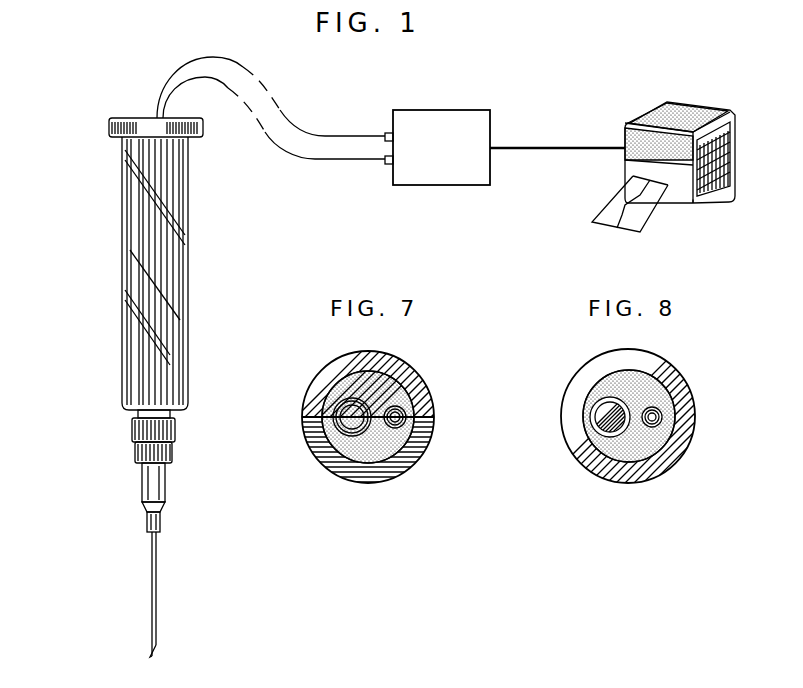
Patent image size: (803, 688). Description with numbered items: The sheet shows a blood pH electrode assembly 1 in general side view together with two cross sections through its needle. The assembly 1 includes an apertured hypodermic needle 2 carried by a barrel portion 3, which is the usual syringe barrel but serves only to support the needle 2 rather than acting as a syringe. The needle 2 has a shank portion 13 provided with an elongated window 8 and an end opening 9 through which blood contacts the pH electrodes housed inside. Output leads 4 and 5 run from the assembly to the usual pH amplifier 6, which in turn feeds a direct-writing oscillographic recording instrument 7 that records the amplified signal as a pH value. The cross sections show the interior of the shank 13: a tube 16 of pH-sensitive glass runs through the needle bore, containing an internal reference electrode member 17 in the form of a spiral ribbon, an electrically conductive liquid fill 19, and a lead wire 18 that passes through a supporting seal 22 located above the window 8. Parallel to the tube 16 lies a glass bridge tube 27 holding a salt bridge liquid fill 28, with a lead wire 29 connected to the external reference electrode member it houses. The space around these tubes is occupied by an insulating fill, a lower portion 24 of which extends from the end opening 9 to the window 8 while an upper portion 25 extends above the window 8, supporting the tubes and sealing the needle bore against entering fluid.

In FIG. 1, the blood pH electrode assembly 1 is at (97, 184).
In FIG. 1, the hypodermic needle 2 is at (151, 538).
In FIG. 1, the barrel portion 3 is at (145, 258).
In FIG. 1, the output lead 4 is at (203, 56).
In FIG. 1, the output lead 5 is at (206, 78).
In FIG. 1, the pH amplifier 6 is at (443, 119).
In FIG. 1, the recording instrument 7 is at (661, 116).
In FIG. 1, the window 8 is at (153, 585).
In FIG. 7, the window 8 is at (392, 462).
In FIG. 1, the end opening 9 is at (152, 645).
In FIG. 7, the shank portion 13 is at (414, 386).
In FIG. 8, the shank portion 13 is at (670, 388).
In FIG. 7, the tube of pH-sensitive glass 16 is at (332, 384).
In FIG. 8, the tube of pH-sensitive glass 16 is at (600, 388).
In FIG. 7, the internal reference electrode member 17 is at (343, 420).
In FIG. 8, the lead wire 18 is at (612, 425).
In FIG. 7, the electrically conductive liquid fill 19 is at (351, 426).
In FIG. 8, the supporting seal 22 is at (597, 411).
In FIG. 7, the insulating fill 24 is at (379, 382).
In FIG. 8, the upper portion of insulating fill 25 is at (641, 384).
In FIG. 7, the glass bridge tube 27 is at (406, 411).
In FIG. 8, the glass bridge tube 27 is at (661, 410).
In FIG. 7, the salt bridge liquid fill 28 is at (407, 437).
In FIG. 8, the salt bridge liquid fill 28 is at (653, 426).
In FIG. 7, the lead wire 29 is at (412, 423).
In FIG. 8, the lead wire 29 is at (663, 420).